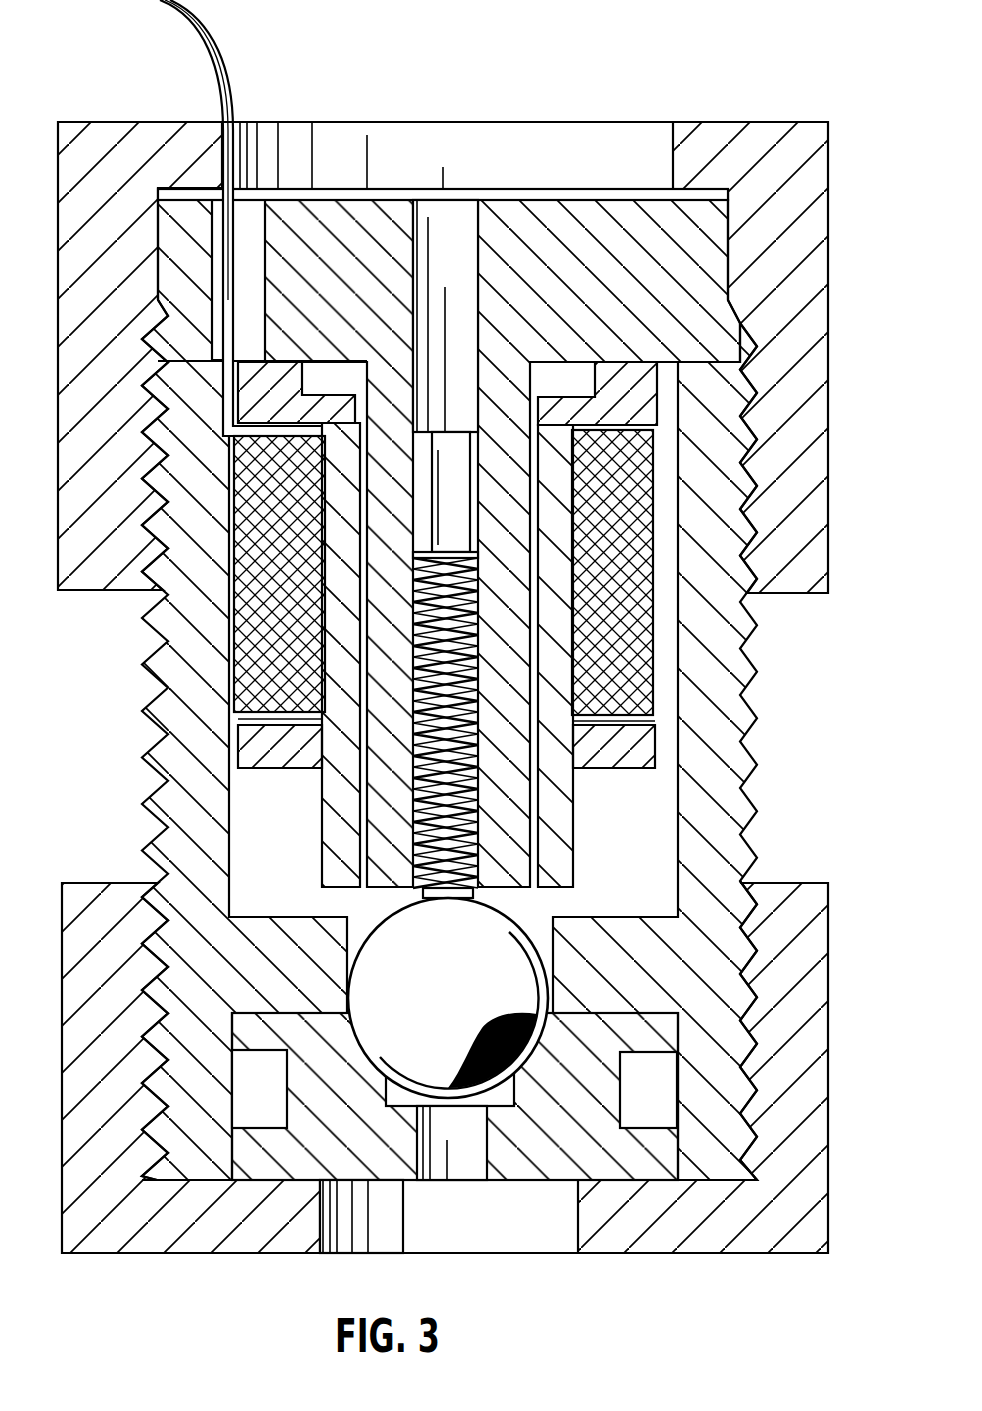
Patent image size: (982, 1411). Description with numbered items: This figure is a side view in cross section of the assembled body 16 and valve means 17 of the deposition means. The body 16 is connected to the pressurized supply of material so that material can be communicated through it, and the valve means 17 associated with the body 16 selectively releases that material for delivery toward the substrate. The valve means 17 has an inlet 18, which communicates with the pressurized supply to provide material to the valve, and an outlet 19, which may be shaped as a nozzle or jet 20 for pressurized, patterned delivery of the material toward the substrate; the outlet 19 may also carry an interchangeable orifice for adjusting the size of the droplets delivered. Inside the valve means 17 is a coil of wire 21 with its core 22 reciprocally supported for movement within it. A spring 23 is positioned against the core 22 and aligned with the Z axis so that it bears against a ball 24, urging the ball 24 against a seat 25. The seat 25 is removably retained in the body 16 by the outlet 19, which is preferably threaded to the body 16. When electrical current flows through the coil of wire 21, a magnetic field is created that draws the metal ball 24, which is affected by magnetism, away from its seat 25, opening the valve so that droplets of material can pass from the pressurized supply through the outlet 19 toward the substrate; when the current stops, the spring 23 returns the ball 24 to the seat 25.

The body 16 is at (461, 660).
The valve means 17 is at (768, 786).
The inlet 18 is at (633, 150).
The outlet 19 is at (573, 1220).
The nozzle or jet 20 is at (430, 1145).
The coil of wire 21 is at (250, 737).
The core 22 is at (385, 710).
The spring 23 is at (487, 821).
The ball 24 is at (461, 986).
The seat 25 is at (373, 1053).